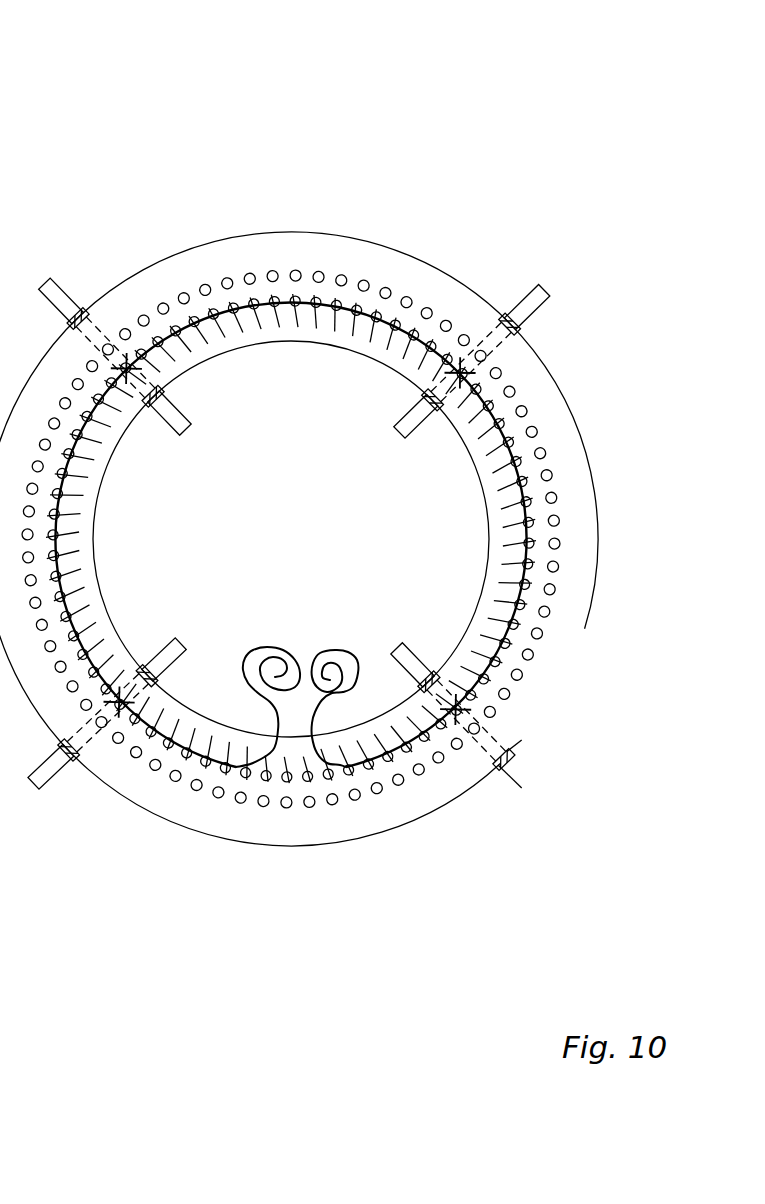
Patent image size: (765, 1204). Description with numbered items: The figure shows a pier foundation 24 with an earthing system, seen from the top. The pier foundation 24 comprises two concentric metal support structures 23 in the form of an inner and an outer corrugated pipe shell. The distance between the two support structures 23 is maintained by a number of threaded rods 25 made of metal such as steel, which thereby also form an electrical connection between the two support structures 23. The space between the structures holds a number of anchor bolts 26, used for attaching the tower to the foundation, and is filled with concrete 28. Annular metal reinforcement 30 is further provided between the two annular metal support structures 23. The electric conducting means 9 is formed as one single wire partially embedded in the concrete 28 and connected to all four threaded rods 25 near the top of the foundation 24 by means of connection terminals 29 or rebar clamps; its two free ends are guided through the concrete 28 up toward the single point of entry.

The pier foundation 24 is at (110, 219).
The annular metal reinforcement 30 is at (242, 306).
The connection terminals 29 is at (461, 372).
The threaded rods 25 is at (535, 305).
The anchor bolts 26 is at (543, 450).
The electric conducting means 9 is at (263, 644).
The metal support structures 23 is at (190, 830).
The concrete 28 is at (283, 822).